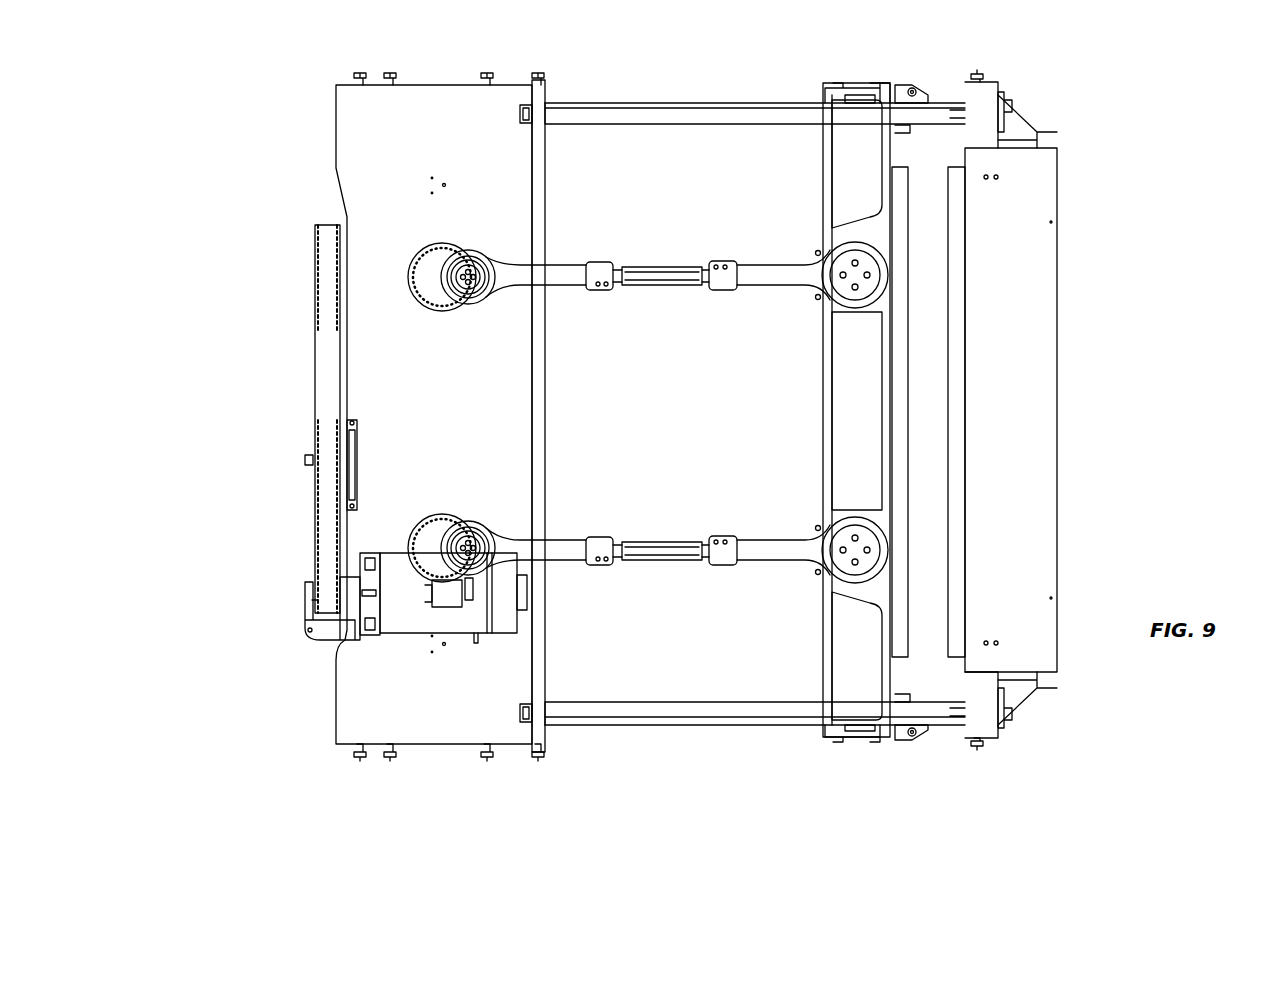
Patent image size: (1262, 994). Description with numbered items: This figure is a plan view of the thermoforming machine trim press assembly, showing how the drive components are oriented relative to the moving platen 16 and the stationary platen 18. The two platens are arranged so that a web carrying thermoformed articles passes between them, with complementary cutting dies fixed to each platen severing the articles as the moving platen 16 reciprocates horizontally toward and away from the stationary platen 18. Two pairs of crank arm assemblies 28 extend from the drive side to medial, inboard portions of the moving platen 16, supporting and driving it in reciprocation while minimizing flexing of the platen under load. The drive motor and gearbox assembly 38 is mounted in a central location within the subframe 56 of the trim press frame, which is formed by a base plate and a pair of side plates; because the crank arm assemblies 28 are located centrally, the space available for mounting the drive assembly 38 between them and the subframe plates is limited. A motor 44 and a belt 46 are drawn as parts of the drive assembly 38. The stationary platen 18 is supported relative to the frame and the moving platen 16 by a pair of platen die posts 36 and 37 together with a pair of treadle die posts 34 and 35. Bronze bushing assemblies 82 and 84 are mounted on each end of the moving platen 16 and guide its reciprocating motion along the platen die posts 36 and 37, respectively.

The moving platen 16 is at (868, 422).
The stationary platen 18 is at (1023, 422).
The crank arm assemblies 28 is at (636, 306).
The treadle die post 34 is at (692, 707).
The treadle die post 35 is at (692, 115).
The platen die post 36 is at (613, 727).
The platen die post 37 is at (643, 99).
The drive motor and gearbox assembly 38 is at (297, 513).
The motor 44 is at (400, 612).
The drive belt 46 is at (329, 396).
The subframe 56 is at (425, 768).
The bronze bushing 82 is at (923, 740).
The bronze bushing 84 is at (923, 85).